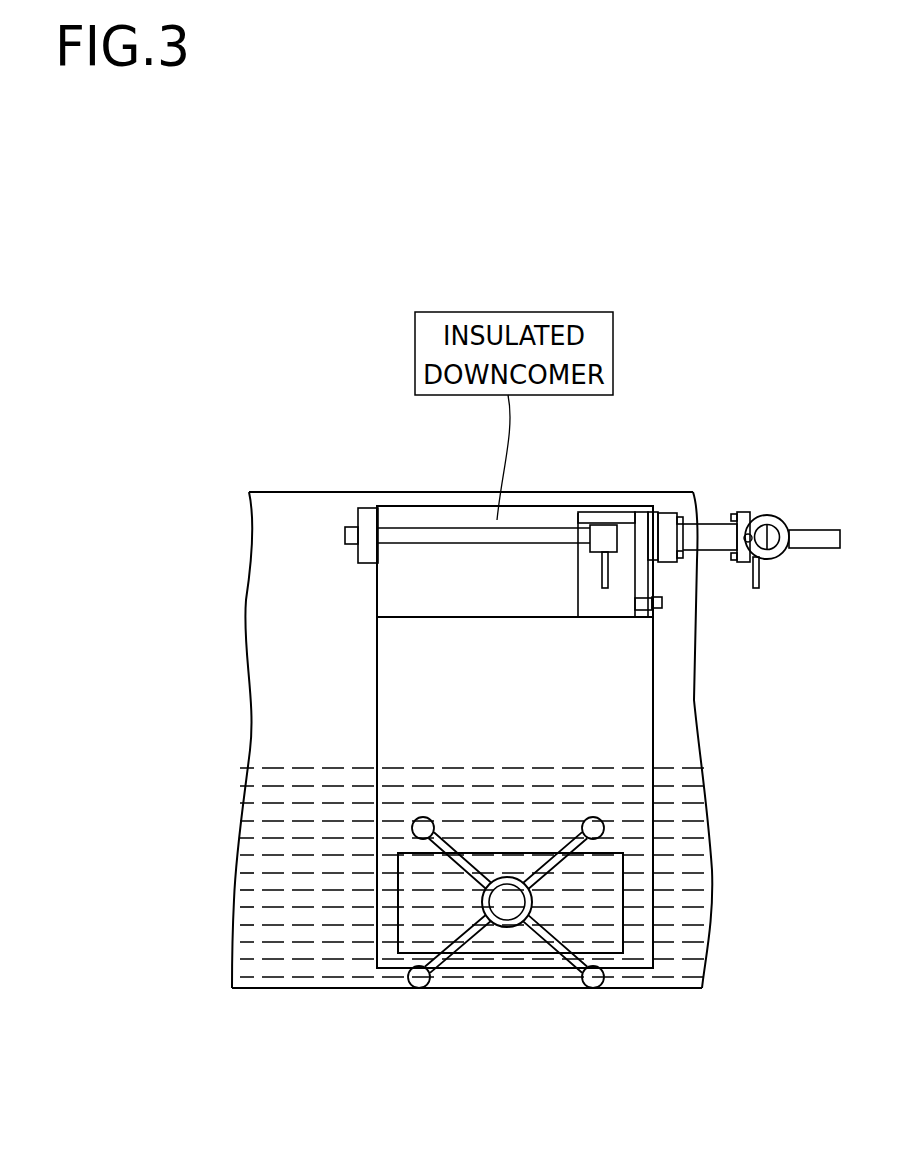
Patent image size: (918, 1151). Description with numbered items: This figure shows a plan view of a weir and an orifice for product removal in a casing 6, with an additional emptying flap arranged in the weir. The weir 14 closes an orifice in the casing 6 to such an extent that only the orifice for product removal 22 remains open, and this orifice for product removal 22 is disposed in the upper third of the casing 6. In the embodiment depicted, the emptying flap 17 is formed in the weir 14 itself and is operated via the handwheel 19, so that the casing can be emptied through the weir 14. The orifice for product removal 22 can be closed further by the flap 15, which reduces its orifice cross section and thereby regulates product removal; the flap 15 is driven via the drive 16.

The casing 6 is at (318, 940).
The weir 14 is at (580, 723).
The flap 15 is at (617, 546).
The drive 16 is at (758, 515).
The emptying flap 17 is at (602, 895).
The handwheel 19 is at (563, 958).
The orifice for product removal 22 is at (428, 560).